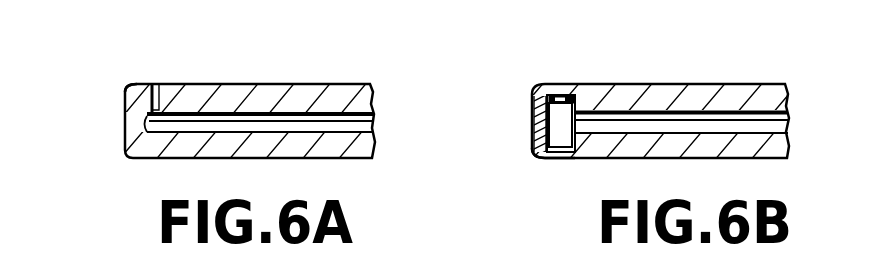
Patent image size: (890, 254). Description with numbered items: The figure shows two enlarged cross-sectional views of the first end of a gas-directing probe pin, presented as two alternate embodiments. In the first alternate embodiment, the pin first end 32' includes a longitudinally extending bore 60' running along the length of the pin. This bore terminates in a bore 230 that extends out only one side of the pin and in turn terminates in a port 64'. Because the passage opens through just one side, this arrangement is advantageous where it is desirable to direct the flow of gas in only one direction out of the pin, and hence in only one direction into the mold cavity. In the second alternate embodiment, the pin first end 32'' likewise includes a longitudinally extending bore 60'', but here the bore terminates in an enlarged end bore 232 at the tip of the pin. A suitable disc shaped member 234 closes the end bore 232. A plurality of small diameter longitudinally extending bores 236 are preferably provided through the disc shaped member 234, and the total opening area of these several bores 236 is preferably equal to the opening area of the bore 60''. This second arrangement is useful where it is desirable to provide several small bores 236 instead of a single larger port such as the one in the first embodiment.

In FIG. 6A, the pin first end 32' is at (243, 93).
In FIG. 6A, the port 64' is at (183, 66).
In FIG. 6A, the bore 230 is at (130, 91).
In FIG. 6A, the longitudinally extending bore 60' is at (305, 131).
In FIG. 6B, the pin first end 32'' is at (666, 93).
In FIG. 6B, the longitudinally extending bore 60'' is at (720, 133).
In FIG. 6B, the enlarged end bore 232 is at (555, 98).
In FIG. 6B, the small diameter longitudinally extending bores 236 is at (535, 107).
In FIG. 6B, the disc shaped member 234 is at (537, 155).